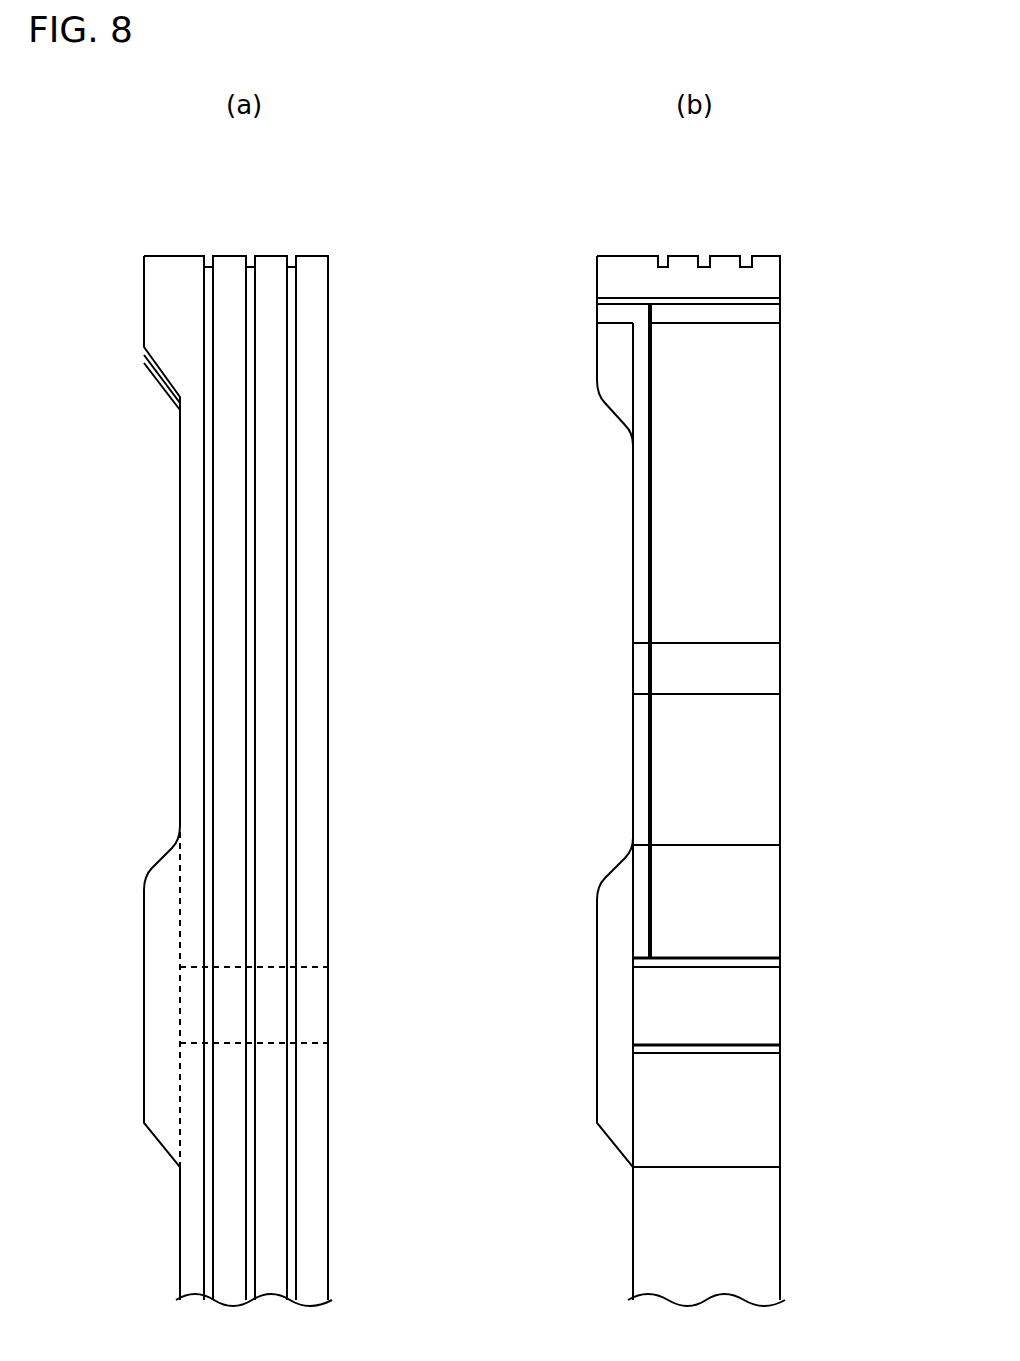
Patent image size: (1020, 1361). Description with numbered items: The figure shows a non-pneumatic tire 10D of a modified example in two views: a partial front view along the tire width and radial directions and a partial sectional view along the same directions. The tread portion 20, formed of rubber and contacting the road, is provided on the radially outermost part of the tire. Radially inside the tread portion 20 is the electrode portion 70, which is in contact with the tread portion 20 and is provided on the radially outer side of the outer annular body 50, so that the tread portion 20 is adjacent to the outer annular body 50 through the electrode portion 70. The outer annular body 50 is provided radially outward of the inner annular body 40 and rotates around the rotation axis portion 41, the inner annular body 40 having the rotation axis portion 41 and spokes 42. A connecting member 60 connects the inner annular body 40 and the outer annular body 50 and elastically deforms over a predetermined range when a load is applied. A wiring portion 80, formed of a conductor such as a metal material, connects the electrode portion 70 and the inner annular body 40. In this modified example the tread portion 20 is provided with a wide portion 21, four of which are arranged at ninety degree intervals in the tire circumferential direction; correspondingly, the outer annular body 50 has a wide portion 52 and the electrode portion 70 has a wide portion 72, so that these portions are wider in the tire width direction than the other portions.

The non-pneumatic tire 10D is at (477, 705).
The tread portion 20 is at (316, 690).
The wide portion 21 is at (150, 305).
The inner annular body 40 is at (782, 667).
The rotation axis portion 41 is at (782, 963).
The spokes 42 is at (782, 765).
The outer annular body 50 is at (782, 313).
The wide portion 52 is at (166, 401).
The connecting member 60 is at (782, 496).
The electrode portion 70 is at (782, 300).
The wide portion 72 is at (150, 372).
The wiring portion 80 is at (648, 493).